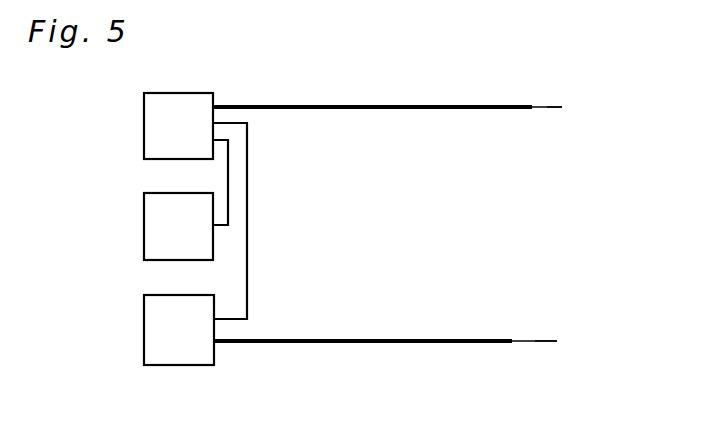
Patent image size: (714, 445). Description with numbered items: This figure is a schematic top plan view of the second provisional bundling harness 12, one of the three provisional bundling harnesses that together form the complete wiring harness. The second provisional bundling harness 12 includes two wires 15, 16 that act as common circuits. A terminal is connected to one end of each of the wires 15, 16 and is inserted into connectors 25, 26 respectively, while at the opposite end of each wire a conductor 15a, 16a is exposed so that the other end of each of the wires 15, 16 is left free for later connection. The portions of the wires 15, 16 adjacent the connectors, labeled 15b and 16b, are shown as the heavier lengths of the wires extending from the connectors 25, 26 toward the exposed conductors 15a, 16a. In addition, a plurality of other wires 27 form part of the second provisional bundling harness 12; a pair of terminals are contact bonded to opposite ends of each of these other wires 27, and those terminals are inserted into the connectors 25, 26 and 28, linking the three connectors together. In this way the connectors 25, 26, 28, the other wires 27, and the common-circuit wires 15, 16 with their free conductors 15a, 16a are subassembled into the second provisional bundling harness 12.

The second provisional bundling harness 12 is at (507, 223).
The wire 15 is at (444, 105).
The conductor 15a is at (549, 106).
The input portion of first waveguide 15b is at (360, 108).
The wire 16 is at (430, 344).
The conductor 16a is at (535, 340).
The input portion of second waveguide 16b is at (357, 340).
The connector 25 is at (144, 126).
The connector 26 is at (145, 335).
The other wires 27 is at (229, 195).
The connector 28 is at (144, 235).